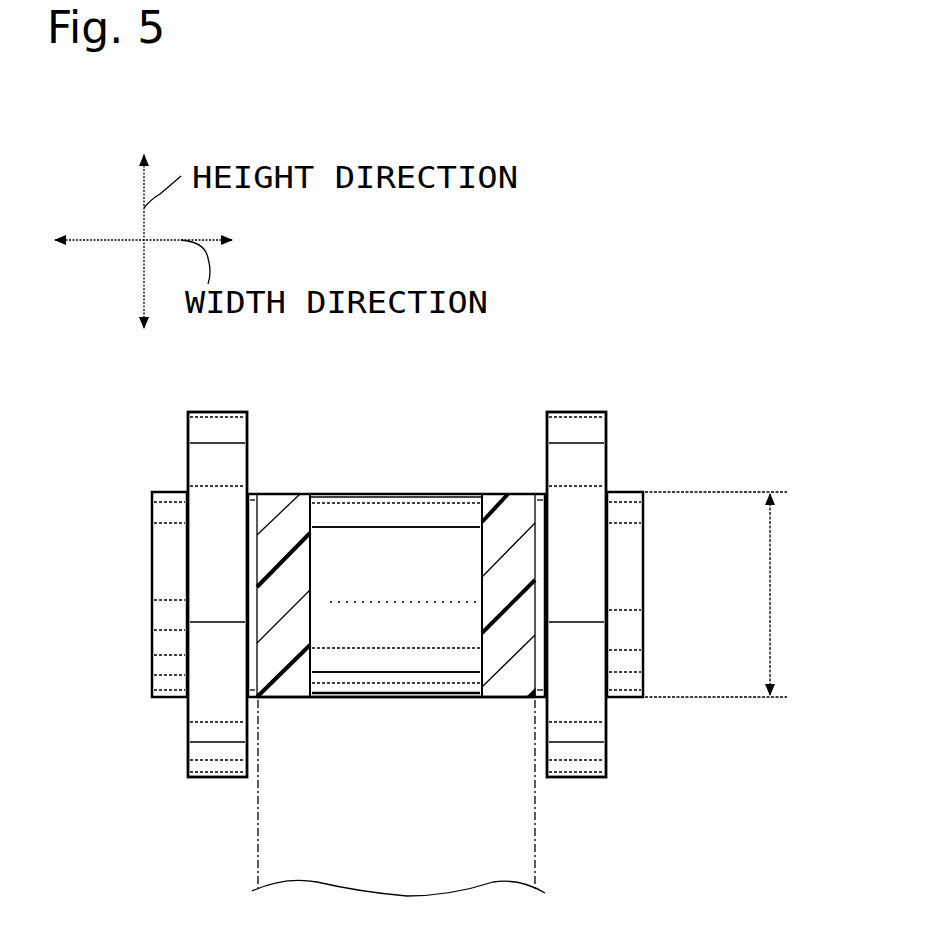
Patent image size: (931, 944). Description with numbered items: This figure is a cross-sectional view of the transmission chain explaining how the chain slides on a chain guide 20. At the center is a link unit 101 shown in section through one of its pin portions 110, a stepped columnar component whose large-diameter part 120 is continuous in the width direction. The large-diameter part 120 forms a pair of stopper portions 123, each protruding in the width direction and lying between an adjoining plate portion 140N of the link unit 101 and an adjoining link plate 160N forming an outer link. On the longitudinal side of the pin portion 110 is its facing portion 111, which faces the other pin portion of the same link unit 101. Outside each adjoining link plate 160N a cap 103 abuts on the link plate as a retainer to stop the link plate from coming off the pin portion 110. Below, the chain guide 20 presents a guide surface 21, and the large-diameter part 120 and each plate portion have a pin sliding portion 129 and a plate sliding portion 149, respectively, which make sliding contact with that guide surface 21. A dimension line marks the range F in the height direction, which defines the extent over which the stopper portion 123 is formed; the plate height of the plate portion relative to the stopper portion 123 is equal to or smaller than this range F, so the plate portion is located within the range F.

The link unit 101 is at (648, 352).
The pin portion 110 is at (405, 494).
The facing portion 111 is at (455, 553).
The large-diameter part 120 is at (341, 494).
The pin sliding portion 129 is at (414, 698).
The adjoining plate portion 140N is at (266, 513).
The plate sliding portion 149 is at (278, 698).
The adjoining link plate 160N is at (214, 722).
The cap 103 is at (168, 588).
The stopper portion 123 is at (252, 541).
The guide surface 21 is at (386, 695).
The chain guide 20 is at (258, 845).
The range in the height direction F is at (772, 594).